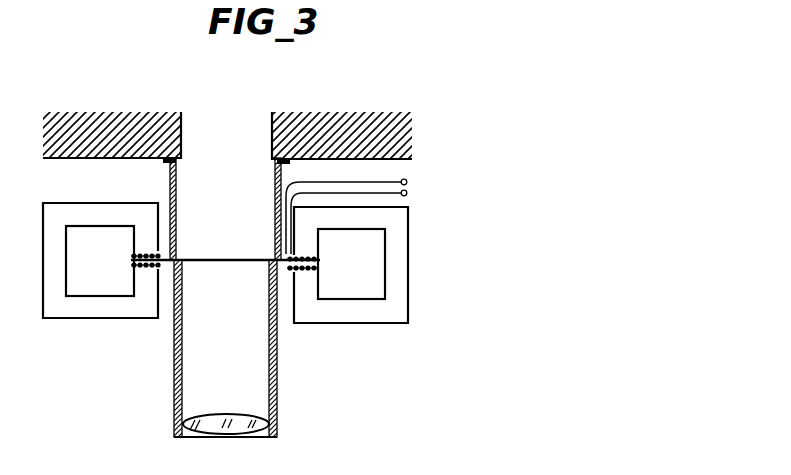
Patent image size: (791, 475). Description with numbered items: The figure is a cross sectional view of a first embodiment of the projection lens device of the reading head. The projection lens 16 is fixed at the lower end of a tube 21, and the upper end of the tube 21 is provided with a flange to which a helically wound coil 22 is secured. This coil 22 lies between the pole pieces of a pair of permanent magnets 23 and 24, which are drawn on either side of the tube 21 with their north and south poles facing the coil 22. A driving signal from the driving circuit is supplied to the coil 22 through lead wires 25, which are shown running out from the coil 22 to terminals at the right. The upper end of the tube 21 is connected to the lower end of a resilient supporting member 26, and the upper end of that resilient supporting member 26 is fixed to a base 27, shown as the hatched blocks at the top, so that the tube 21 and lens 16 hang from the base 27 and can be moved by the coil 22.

The projection lens 16 is at (205, 413).
The tube 21 is at (277, 413).
The helically wound coil 22 is at (318, 266).
The permanent magnet 23 is at (348, 312).
The permanent magnet 24 is at (107, 308).
The lead wires 25 is at (412, 183).
The resilient supporting member 26 is at (276, 178).
The base 27 is at (305, 122).